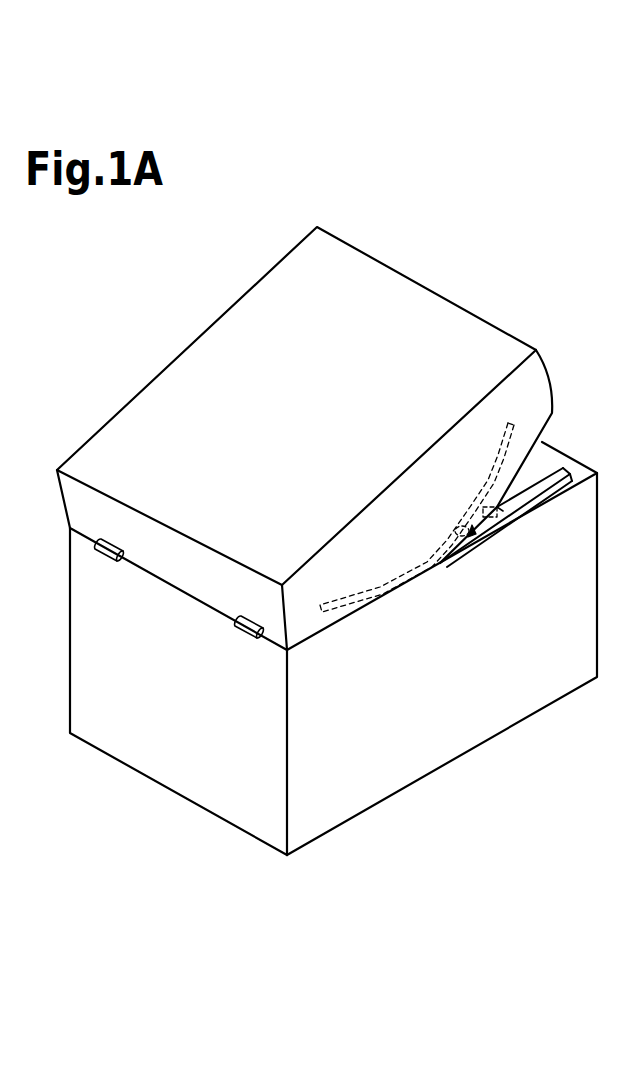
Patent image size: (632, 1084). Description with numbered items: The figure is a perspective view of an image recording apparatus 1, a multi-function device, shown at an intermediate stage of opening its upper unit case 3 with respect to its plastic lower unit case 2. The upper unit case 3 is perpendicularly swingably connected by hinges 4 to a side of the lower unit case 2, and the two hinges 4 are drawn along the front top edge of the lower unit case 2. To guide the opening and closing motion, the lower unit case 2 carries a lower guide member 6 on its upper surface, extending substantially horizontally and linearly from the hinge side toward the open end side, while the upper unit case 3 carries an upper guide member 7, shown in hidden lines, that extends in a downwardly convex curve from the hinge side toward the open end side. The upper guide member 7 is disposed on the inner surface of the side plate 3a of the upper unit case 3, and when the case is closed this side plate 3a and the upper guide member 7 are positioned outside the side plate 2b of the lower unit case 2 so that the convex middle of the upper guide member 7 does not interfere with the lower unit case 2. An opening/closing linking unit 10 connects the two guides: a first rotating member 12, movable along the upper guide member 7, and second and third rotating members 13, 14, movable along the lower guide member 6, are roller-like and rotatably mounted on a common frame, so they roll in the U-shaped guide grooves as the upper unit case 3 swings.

The image recording apparatus 1 is at (168, 340).
The lower unit case 2 is at (90, 627).
The side plate of the lower unit case 2b is at (473, 725).
The upper unit case 3 is at (140, 405).
The side plate of the upper unit case 3a is at (410, 507).
The hinge 4 is at (102, 556).
The lower guide member 6 is at (520, 507).
The upper guide member 7 is at (490, 462).
The opening/closing linking unit 10 is at (470, 535).
The first rotating member 12 is at (462, 507).
The second rotating member 13 is at (458, 535).
The third rotating member 14 is at (500, 510).